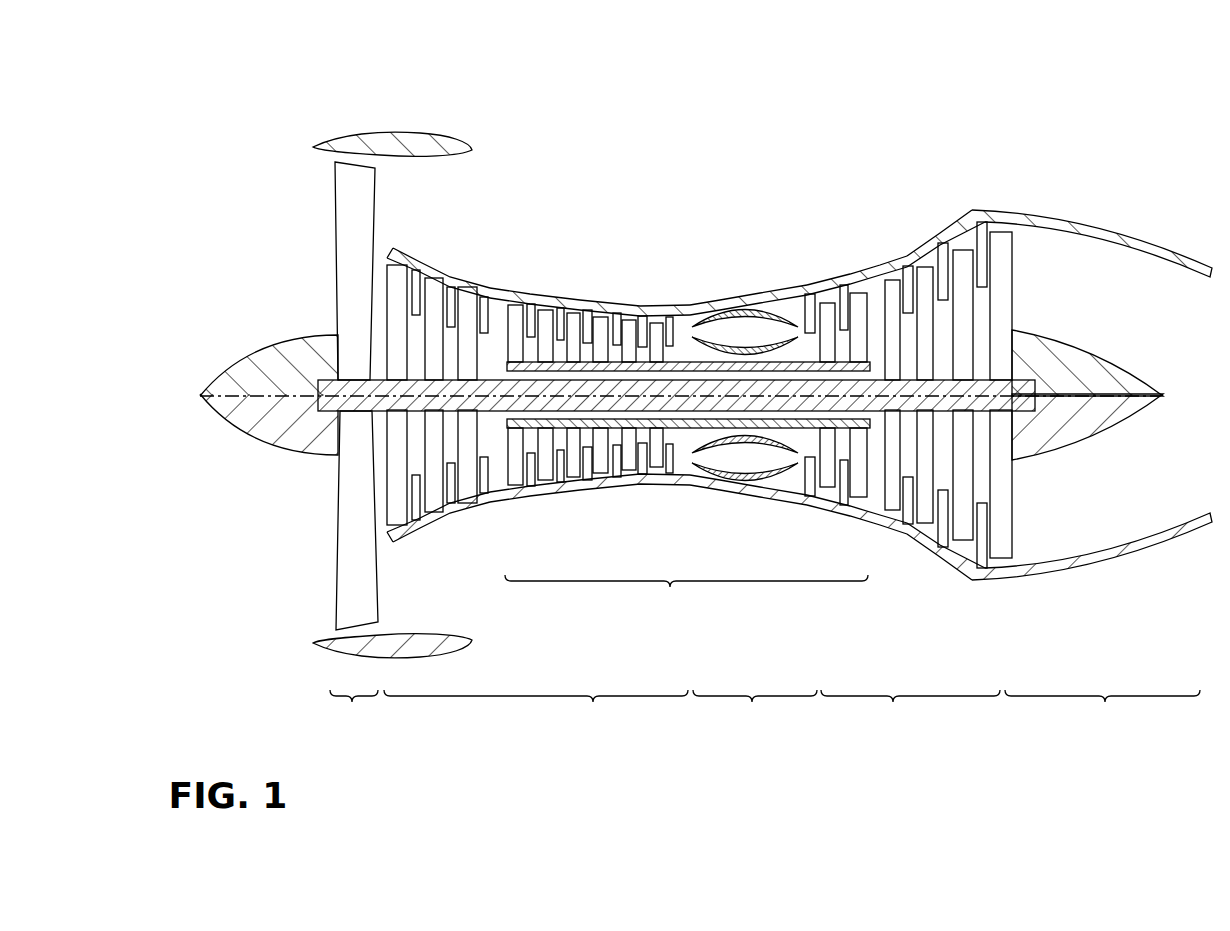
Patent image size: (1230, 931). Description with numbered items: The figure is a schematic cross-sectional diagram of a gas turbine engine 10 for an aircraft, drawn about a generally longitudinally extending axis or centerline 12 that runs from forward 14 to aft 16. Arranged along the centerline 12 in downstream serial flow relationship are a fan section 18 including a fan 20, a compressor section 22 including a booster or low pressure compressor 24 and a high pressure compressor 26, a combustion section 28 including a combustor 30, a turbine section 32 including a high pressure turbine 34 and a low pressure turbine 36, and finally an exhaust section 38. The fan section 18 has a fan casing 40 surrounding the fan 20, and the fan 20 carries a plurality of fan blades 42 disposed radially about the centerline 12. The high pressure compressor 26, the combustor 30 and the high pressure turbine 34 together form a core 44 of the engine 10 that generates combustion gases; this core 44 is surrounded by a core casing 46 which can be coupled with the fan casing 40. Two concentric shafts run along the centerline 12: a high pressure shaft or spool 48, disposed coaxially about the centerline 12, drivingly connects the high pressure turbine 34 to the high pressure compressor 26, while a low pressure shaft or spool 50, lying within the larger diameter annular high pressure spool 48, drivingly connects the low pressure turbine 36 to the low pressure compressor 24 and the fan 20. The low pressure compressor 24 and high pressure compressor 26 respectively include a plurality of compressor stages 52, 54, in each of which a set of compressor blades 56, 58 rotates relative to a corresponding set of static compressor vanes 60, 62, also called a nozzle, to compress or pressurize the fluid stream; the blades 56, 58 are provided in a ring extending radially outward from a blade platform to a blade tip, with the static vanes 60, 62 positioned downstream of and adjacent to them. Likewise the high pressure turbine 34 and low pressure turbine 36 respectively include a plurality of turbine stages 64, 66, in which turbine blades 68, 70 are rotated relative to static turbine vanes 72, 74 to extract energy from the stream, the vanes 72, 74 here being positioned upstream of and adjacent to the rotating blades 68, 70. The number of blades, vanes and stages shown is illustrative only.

The gas turbine engine 10 is at (222, 77).
The centerline 12 is at (250, 393).
The forward 14 is at (200, 396).
The aft 16 is at (1160, 396).
The fan section 18 is at (354, 709).
The fan 20 is at (320, 396).
The compressor section 22 is at (536, 709).
The low pressure compressor 24 is at (498, 525).
The high pressure compressor 26 is at (636, 494).
The combustion section 28 is at (755, 709).
The combustor 30 is at (791, 310).
The turbine section 32 is at (910, 709).
The high pressure turbine 34 is at (806, 521).
The low pressure turbine 36 is at (916, 555).
The exhaust section 38 is at (1092, 469).
The fan casing 40 is at (395, 132).
The fan blades 42 is at (347, 580).
The core 44 is at (686, 595).
The core casing 46 is at (728, 300).
The HP shaft 48 is at (687, 358).
The LP shaft 50 is at (490, 379).
The compressor stages 52 is at (437, 347).
The compressor stages 54 is at (590, 336).
The compressor blades 56 is at (417, 278).
The compressor blades 58 is at (532, 300).
The static compressor vanes 60 is at (424, 280).
The static compressor vanes 62 is at (541, 313).
The turbine stages 64 is at (834, 335).
The turbine stages 66 is at (948, 346).
The turbine blades 68 is at (858, 305).
The turbine blades 70 is at (960, 267).
The static turbine vanes 72 is at (847, 300).
The static turbine vanes 74 is at (948, 260).